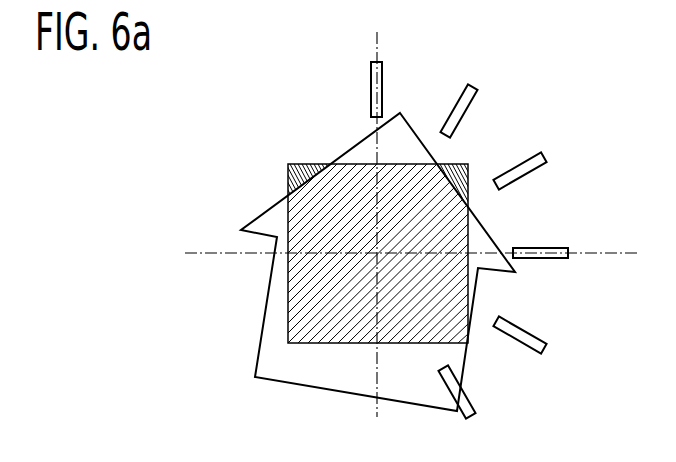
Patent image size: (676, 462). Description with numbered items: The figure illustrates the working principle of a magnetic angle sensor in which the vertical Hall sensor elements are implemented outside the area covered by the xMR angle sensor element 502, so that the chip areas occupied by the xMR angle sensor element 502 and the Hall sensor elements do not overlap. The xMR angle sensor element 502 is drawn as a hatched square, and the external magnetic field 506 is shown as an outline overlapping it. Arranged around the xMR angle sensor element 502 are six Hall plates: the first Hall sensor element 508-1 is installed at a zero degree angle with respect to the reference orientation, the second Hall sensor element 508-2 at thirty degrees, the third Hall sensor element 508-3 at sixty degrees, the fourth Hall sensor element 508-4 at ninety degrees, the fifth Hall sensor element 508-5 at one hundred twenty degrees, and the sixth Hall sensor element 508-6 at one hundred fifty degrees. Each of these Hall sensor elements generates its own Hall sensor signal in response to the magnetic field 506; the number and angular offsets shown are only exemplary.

The xMR angle sensor element 502 is at (294, 175).
The magnetic field 506 is at (268, 357).
The first Hall sensor element 508-1 is at (370, 93).
The second Hall sensor element 508-2 is at (476, 88).
The third Hall sensor element 508-3 is at (548, 155).
The fourth Hall sensor element 508-4 is at (566, 250).
The fifth Hall sensor element 508-5 is at (543, 338).
The sixth Hall sensor element 508-6 is at (466, 395).